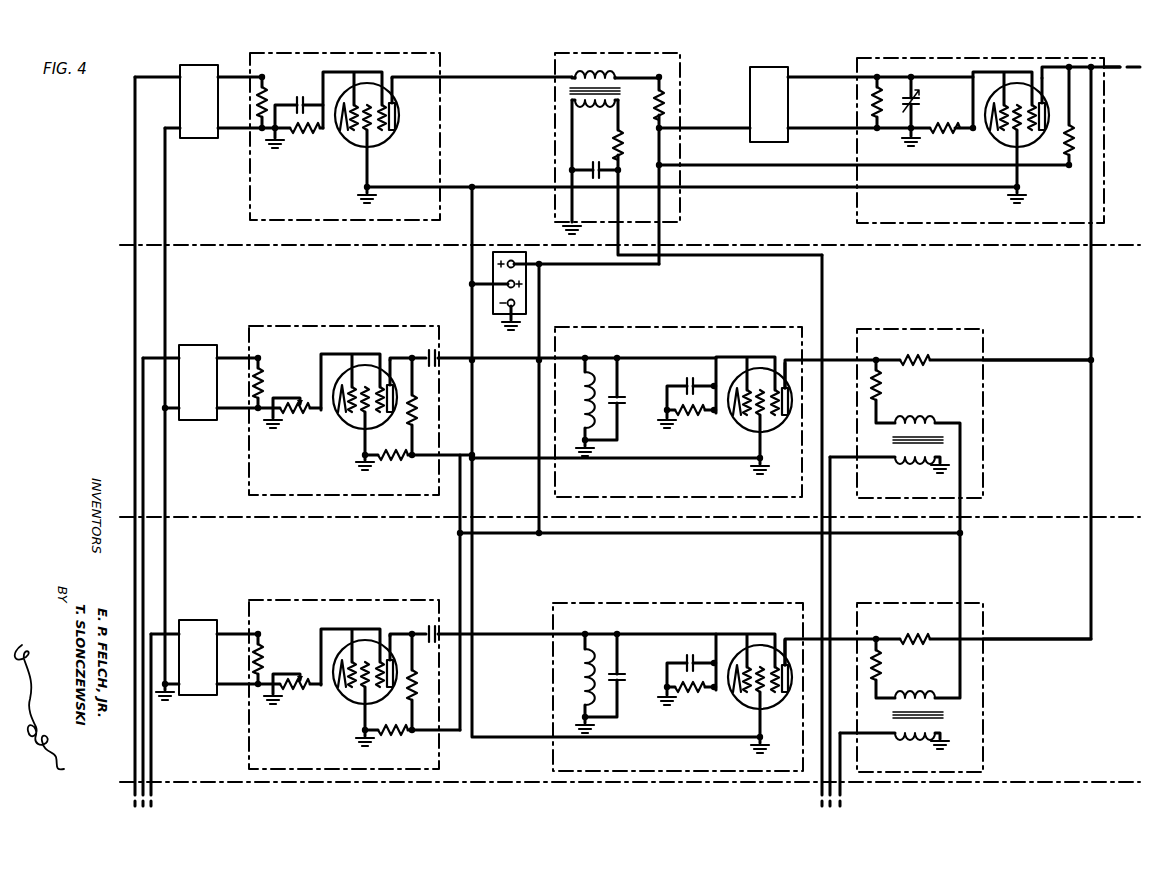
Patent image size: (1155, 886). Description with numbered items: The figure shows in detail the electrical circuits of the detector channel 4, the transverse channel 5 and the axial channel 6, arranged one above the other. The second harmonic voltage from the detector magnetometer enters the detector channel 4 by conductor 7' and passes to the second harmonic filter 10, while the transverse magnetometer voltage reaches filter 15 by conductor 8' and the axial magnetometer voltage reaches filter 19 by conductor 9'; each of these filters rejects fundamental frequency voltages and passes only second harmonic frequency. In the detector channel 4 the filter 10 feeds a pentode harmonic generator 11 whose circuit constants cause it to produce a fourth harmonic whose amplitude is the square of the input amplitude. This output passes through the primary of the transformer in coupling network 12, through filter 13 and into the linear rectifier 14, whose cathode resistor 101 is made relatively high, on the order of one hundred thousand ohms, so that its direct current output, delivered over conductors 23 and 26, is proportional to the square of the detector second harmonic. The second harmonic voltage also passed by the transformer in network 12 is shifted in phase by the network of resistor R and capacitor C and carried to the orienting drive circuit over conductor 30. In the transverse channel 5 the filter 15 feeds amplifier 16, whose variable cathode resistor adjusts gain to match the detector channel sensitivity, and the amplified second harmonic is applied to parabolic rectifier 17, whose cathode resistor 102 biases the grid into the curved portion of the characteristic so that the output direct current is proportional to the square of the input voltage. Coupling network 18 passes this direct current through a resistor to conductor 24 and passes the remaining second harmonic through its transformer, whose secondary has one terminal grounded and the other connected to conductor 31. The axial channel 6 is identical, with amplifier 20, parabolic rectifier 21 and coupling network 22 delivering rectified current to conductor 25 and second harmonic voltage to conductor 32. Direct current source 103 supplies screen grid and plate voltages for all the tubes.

The detector channel 4 is at (292, 207).
The transverse channel 5 is at (297, 480).
The axial channel 6 is at (223, 750).
The conductor 7' is at (157, 441).
The conductor 8' is at (160, 582).
The conductor 9' is at (166, 720).
The second harmonic filter 10 is at (200, 65).
The harmonic generator 11 is at (440, 68).
The coupling network 12 is at (812, 145).
The filter 13 is at (790, 67).
The linear rectifier 14 is at (998, 128).
The second harmonic filter 15 is at (205, 345).
The amplifier 16 is at (422, 326).
The parabolic rectifier 17 is at (715, 400).
The coupling network 18 is at (974, 329).
The second harmonic filter 19 is at (205, 620).
The amplifier 20 is at (416, 600).
The parabolic rectifier 21 is at (576, 603).
The coupling network 22 is at (918, 603).
The output conductor 23 is at (1069, 64).
The conductor 24 is at (1040, 362).
The conductor 25 is at (1032, 638).
The output conductor 26 is at (1117, 66).
The conductor 30 is at (812, 806).
The conductor 31 is at (812, 786).
The conductor 32 is at (840, 803).
The cathode resistor 101 is at (945, 118).
The cathode resistor 102 is at (690, 420).
The direct current source 103 is at (528, 288).
The resistor R is at (614, 142).
The capacitor C is at (594, 166).